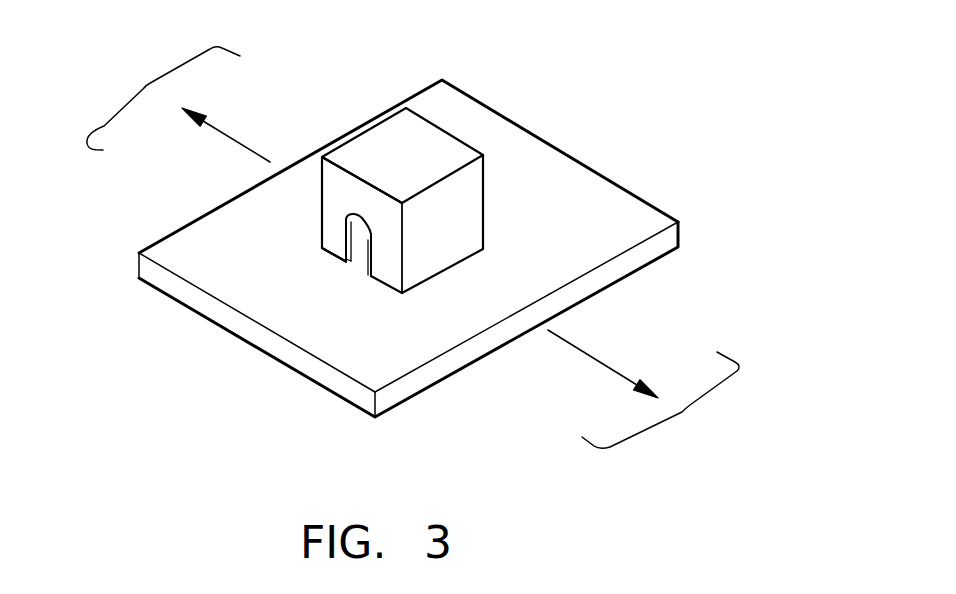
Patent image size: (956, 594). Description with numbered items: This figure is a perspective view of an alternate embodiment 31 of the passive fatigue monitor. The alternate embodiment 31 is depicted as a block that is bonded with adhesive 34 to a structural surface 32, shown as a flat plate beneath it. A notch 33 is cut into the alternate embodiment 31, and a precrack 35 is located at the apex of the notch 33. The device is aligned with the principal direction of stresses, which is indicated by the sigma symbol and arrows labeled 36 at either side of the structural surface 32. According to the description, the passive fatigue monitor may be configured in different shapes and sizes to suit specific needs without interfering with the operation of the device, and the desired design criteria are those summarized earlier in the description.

The alternate embodiment of the passive fatigue monitor 31 is at (345, 218).
The structural surface 32 is at (170, 296).
The notch 33 is at (362, 263).
The adhesive 34 is at (326, 254).
The precrack 35 is at (382, 192).
The principal direction of stresses 36 is at (142, 83).